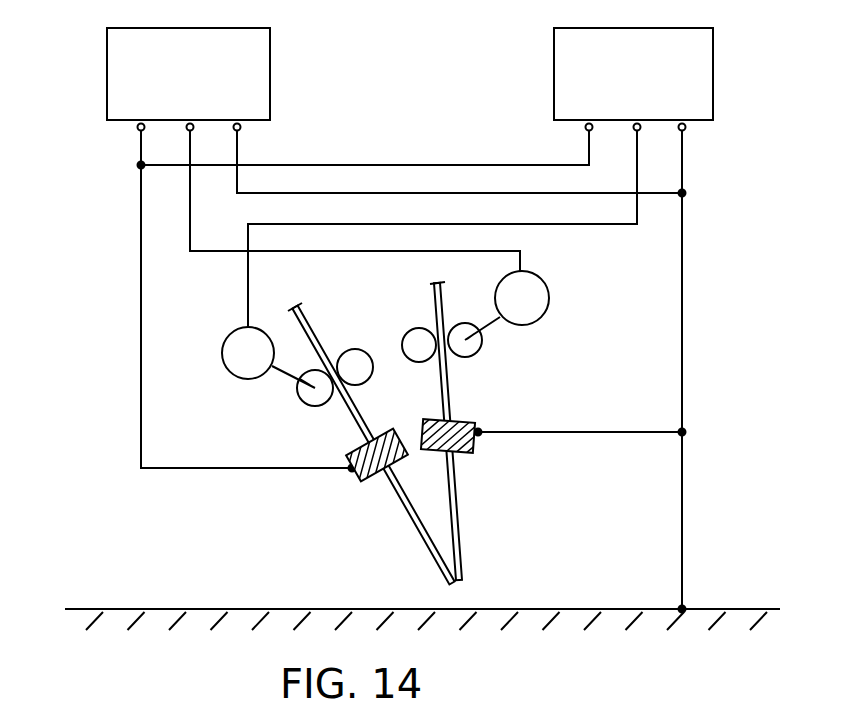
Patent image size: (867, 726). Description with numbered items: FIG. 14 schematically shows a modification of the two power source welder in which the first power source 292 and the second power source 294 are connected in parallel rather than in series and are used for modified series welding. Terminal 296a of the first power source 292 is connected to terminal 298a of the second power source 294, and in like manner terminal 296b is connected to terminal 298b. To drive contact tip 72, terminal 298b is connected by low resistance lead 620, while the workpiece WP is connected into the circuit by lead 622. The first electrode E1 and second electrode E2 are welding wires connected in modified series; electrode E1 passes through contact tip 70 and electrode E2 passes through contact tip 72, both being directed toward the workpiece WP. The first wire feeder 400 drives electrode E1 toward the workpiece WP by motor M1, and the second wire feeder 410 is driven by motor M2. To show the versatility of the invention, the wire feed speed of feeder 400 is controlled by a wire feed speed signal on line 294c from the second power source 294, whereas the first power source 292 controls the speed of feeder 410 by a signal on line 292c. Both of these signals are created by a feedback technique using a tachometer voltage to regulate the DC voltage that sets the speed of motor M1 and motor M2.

The first power source 292 is at (271, 60).
The second power source 294 is at (714, 57).
The terminal of power source 292 296a is at (138, 131).
The terminal of power source 292 296b is at (242, 130).
The lead 292c is at (208, 255).
The lead 294c is at (578, 228).
The terminal of power source 294 298a is at (585, 130).
The terminal of power source 294 298b is at (686, 131).
The low resistance lead 620 is at (608, 431).
The lead 622 is at (686, 530).
The motor M1 is at (248, 353).
The motor M2 is at (522, 298).
The first wire feeder 400 is at (268, 396).
The second wire feeder 410 is at (500, 349).
The contact tip 70 is at (365, 484).
The contact tip 72 is at (465, 422).
The first electrode E1 is at (416, 522).
The second electrode E2 is at (460, 512).
The workpiece WP is at (748, 606).